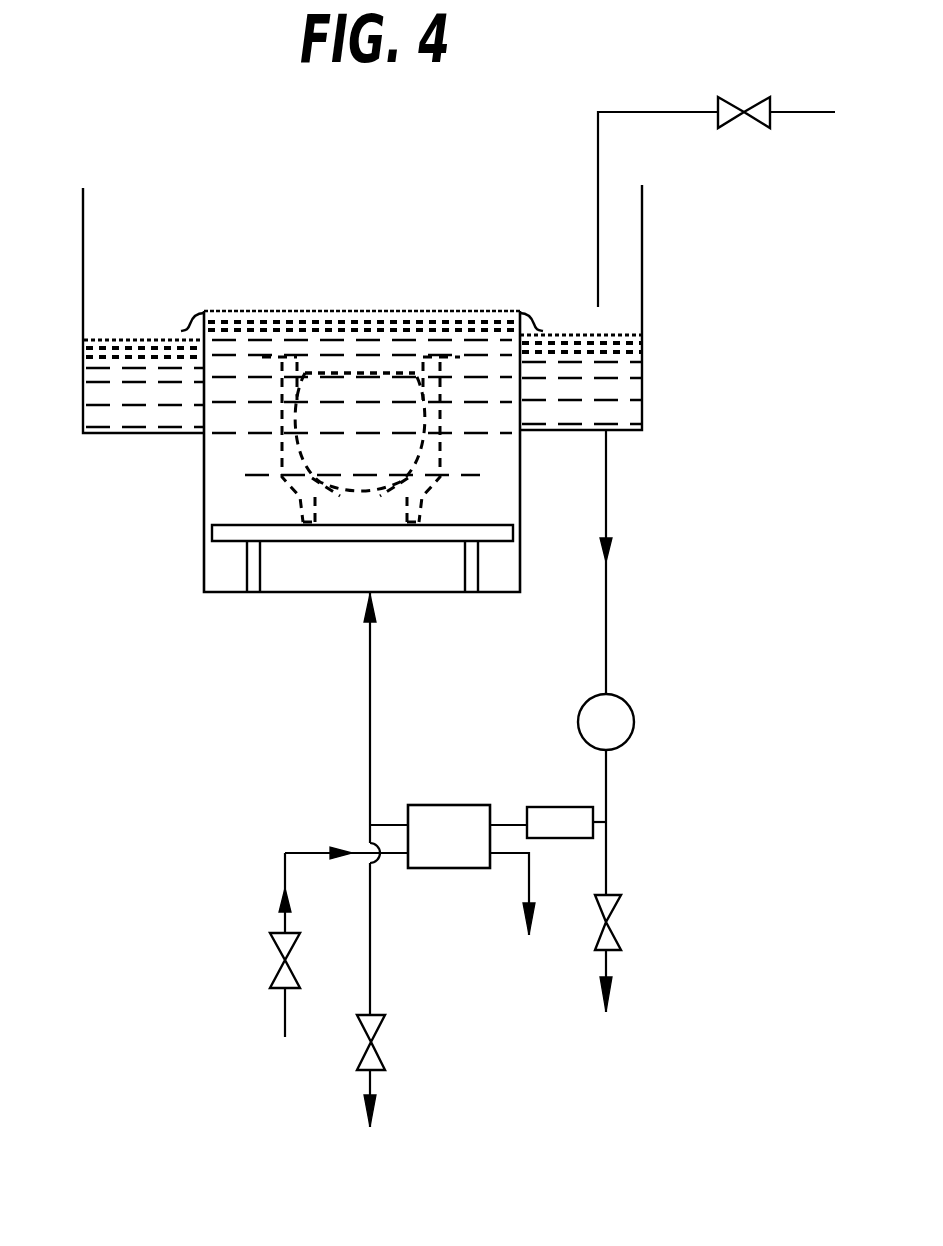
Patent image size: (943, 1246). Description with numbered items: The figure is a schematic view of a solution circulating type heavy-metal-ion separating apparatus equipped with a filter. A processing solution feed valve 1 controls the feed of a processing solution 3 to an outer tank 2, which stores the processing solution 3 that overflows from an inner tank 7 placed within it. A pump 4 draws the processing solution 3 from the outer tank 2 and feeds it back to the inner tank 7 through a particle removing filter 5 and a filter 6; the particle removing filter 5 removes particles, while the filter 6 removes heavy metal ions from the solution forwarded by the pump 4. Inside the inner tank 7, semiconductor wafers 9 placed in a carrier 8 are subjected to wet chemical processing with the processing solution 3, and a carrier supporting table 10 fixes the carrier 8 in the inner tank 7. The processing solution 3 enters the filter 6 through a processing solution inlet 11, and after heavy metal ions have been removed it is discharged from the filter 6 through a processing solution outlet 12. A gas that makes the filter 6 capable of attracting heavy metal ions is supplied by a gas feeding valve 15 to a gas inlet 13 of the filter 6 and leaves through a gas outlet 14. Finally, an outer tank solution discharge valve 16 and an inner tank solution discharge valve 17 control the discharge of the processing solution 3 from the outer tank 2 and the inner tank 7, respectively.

The processing solution feed valve 1 is at (747, 96).
The outer tank 2 is at (642, 292).
The processing solution 3 is at (305, 322).
The pump 4 is at (628, 705).
The particle removing filter 5 is at (595, 815).
The filter 6 is at (450, 805).
The inner tank 7 is at (203, 530).
The carrier 8 is at (433, 378).
The semiconductor wafers 9 is at (365, 372).
The carrier supporting table 10 is at (449, 528).
The processing solution inlet 11 is at (497, 823).
The processing solution outlet 12 is at (394, 823).
The gas inlet 13 is at (381, 851).
The gas outlet 14 is at (505, 851).
The gas feeding valve 15 is at (279, 955).
The outer tank solution discharge valve 16 is at (624, 914).
The inner tank solution discharge valve 17 is at (388, 1040).